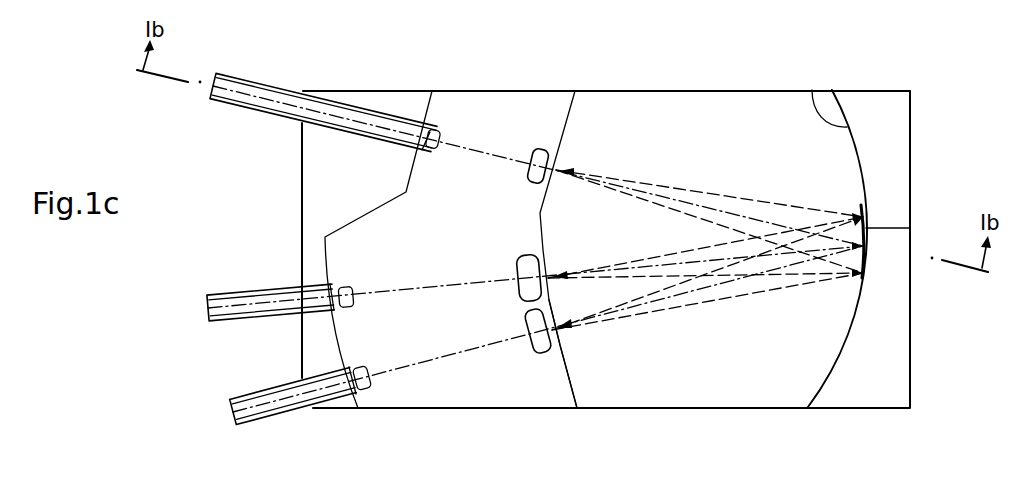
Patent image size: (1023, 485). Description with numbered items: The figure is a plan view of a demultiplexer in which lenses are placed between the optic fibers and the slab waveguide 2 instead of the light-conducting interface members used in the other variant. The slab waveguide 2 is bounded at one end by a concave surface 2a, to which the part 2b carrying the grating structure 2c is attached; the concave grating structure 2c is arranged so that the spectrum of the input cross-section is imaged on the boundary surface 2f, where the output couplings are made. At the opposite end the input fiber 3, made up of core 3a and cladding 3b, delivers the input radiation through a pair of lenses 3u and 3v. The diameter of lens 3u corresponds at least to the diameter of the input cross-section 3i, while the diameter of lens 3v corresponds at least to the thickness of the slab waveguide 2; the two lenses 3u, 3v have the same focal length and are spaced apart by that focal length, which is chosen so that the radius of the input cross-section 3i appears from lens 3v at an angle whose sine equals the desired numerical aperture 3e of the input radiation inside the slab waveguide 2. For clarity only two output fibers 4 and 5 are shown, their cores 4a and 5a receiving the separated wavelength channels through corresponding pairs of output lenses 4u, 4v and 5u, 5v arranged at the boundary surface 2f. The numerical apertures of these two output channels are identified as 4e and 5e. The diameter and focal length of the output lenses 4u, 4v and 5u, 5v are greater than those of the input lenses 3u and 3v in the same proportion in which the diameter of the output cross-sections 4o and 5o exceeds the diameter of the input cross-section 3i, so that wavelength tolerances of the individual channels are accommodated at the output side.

The slab waveguide 2 is at (762, 100).
The concave surface 2a is at (812, 90).
The part with grating structure 2b is at (893, 176).
The grating structure 2c is at (908, 229).
The boundary surface 2f is at (566, 392).
The input fiber 3 is at (526, 137).
The core 3a is at (237, 96).
The cladding 3b is at (273, 111).
The input cross-section 3i is at (425, 148).
The lens 3u is at (436, 135).
The lens 3v is at (540, 155).
The numerical aperture of input radiation 3e is at (665, 189).
The output fiber 4 is at (530, 299).
The core 4a is at (215, 317).
The output lens 4u is at (347, 286).
The output cross-section 4o is at (334, 306).
The output lens 4v is at (521, 260).
The numerical aperture of output radiation 4e is at (651, 261).
The output fiber 5 is at (530, 352).
The core 5a is at (234, 414).
The output lens 5u is at (372, 387).
The output cross-section 5o is at (357, 396).
The output lens 5v is at (541, 346).
The numerical aperture of output radiation 5e is at (645, 310).